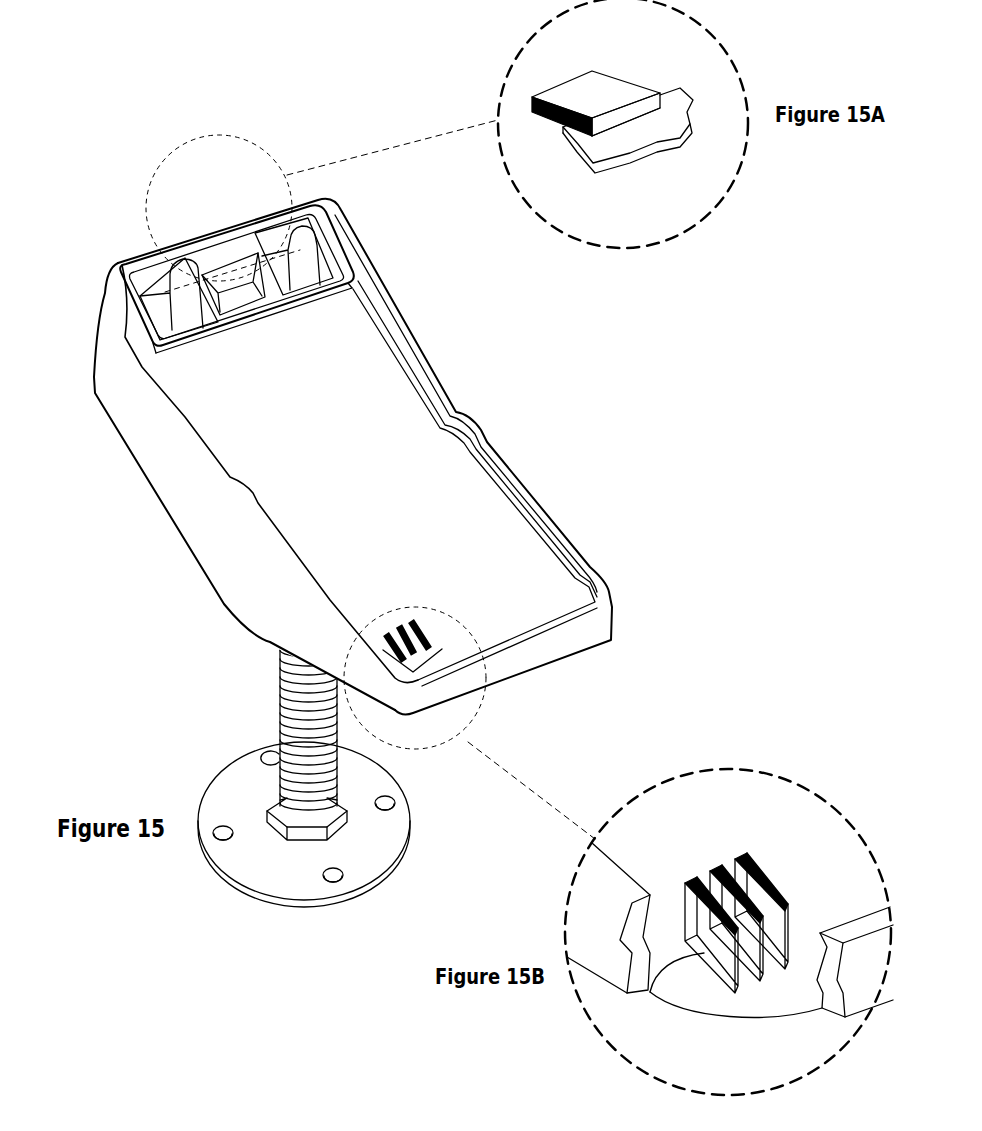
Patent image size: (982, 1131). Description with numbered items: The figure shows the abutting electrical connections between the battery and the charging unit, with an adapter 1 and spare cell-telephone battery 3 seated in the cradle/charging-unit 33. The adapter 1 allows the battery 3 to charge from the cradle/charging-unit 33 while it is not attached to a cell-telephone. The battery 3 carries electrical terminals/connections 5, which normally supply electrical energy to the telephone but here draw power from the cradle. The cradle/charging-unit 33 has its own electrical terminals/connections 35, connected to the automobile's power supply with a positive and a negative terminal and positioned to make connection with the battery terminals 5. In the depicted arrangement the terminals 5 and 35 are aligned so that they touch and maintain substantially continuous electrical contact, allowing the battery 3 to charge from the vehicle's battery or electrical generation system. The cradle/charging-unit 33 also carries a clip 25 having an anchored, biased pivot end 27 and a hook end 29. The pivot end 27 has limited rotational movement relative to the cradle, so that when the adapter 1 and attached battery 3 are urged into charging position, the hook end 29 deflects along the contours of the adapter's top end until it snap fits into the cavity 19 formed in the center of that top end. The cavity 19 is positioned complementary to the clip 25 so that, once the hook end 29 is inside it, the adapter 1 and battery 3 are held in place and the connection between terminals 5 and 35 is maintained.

In FIG. 15, the adapter 1 is at (150, 334).
In FIG. 15, the spare cell-telephone battery 3 is at (374, 502).
In FIG. 15, the electrical terminals/connections 5 is at (433, 630).
In FIG. 15B, the electrical terminals/connections 5 is at (780, 887).
In FIG. 15A, the cavity 19 is at (628, 154).
In FIG. 15A, the clip 25 is at (598, 96).
In FIG. 15A, the pivot end 27 is at (558, 82).
In FIG. 15A, the hook end 29 is at (622, 113).
In FIG. 15, the cradle/charging-unit 33 is at (238, 553).
In FIG. 15B, the electrical terminals/connections 35 is at (650, 992).